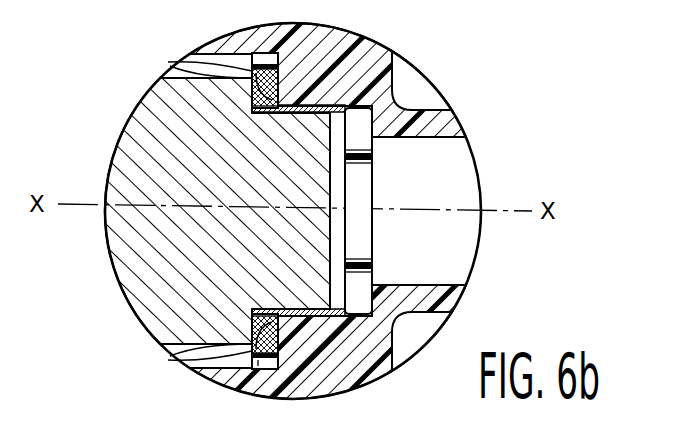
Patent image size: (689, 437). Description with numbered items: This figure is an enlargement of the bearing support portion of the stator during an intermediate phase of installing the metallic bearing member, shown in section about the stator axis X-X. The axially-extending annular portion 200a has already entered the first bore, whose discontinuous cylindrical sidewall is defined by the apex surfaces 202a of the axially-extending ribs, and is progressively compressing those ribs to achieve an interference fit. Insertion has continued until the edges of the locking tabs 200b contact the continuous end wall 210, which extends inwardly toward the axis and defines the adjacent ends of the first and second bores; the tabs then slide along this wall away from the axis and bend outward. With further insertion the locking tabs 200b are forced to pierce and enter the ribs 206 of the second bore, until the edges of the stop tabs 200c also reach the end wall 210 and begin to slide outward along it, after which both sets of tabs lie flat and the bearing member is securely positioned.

The annular portion 200a is at (335, 233).
The locking tabs 200b is at (170, 63).
The stop tabs 200c is at (293, 103).
The apex surfaces 202a is at (355, 163).
The ribs 206 is at (263, 56).
The end wall 210 is at (295, 328).